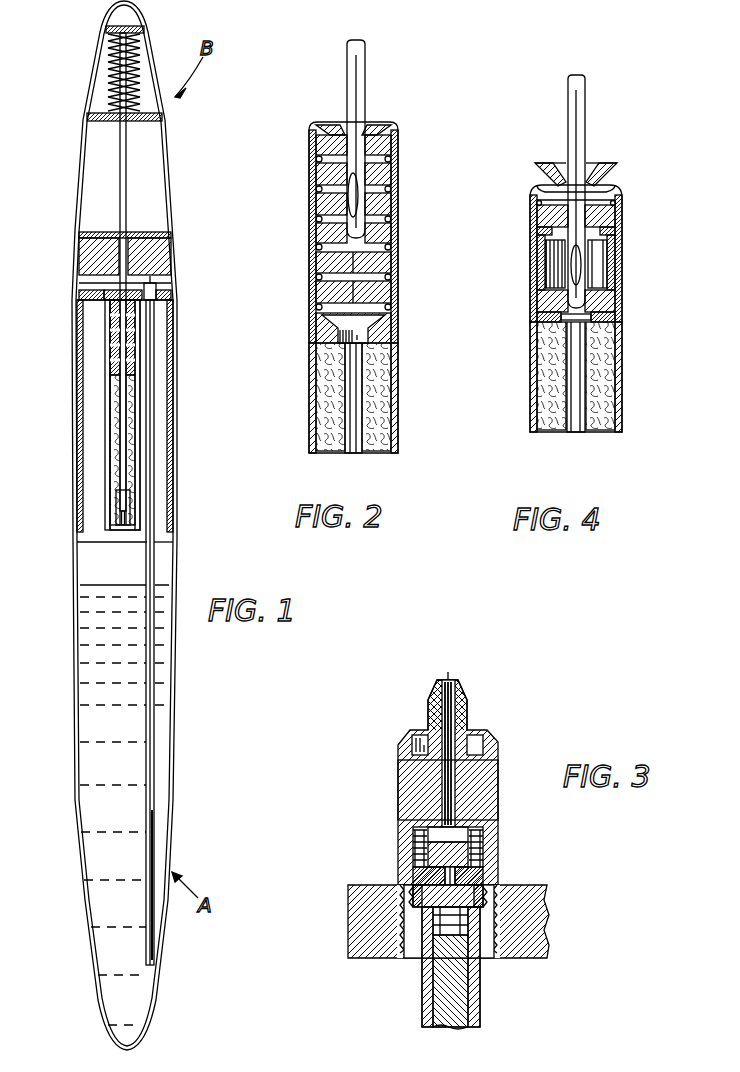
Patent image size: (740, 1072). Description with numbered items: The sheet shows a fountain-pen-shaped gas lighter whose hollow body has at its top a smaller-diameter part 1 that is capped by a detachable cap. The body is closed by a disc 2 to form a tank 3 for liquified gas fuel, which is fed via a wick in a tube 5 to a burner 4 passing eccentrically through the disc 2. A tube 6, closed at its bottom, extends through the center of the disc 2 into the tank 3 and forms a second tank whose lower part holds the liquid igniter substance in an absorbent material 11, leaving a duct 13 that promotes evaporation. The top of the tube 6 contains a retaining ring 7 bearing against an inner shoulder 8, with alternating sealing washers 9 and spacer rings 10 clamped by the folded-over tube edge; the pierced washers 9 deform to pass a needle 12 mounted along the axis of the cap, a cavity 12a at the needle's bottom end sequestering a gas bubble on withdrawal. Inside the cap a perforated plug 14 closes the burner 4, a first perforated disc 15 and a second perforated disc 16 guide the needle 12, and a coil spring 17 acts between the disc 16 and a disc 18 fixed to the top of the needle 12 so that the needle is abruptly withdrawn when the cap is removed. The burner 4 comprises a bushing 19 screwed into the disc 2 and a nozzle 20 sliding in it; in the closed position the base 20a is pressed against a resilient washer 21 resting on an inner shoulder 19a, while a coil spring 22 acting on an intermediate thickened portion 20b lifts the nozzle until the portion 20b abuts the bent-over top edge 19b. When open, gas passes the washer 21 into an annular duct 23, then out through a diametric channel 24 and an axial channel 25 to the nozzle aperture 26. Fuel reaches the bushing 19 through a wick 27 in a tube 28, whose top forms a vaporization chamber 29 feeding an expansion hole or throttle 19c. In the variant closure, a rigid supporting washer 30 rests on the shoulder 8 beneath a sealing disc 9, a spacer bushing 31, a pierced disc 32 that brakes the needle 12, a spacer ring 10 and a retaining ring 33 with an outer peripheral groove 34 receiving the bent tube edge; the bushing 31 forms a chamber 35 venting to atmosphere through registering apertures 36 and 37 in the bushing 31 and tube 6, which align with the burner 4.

In FIG. 1, the smaller-diameter part 1 is at (77, 400).
In FIG. 1, the disc 2 is at (92, 310).
In FIG. 3, the disc 2 is at (548, 924).
In FIG. 1, the tank 3 is at (165, 696).
In FIG. 1, the burner 4 is at (158, 284).
In FIG. 1, the tube 5 is at (150, 762).
In FIG. 1, the tube 6 is at (110, 442).
In FIG. 2, the tube 6 is at (318, 398).
In FIG. 4, the tube 6 is at (537, 384).
In FIG. 2, the retaining ring 7 is at (320, 330).
In FIG. 2, the inner shoulder 8 is at (393, 342).
In FIG. 4, the inner shoulder 8 is at (620, 322).
In FIG. 2, the sealing washers 9 is at (316, 262).
In FIG. 4, the sealing washers 9 is at (615, 292).
In FIG. 2, the spacer rings 10 is at (316, 183).
In FIG. 4, the spacer rings 10 is at (618, 200).
In FIG. 1, the absorbent material 11 is at (140, 470).
In FIG. 2, the absorbent material 11 is at (362, 405).
In FIG. 1, the needle 12 is at (120, 176).
In FIG. 2, the needle 12 is at (347, 72).
In FIG. 4, the needle 12 is at (568, 104).
In FIG. 2, the cavity 12a is at (357, 204).
In FIG. 1, the duct 13 is at (123, 508).
In FIG. 2, the duct 13 is at (356, 434).
In FIG. 1, the perforated plug 14 is at (90, 258).
In FIG. 1, the first perforated disc 15 is at (90, 236).
In FIG. 1, the second perforated disc 16 is at (88, 117).
In FIG. 1, the coil spring 17 is at (110, 58).
In FIG. 1, the disc 18 is at (108, 30).
In FIG. 3, the bushing 19 is at (396, 757).
In FIG. 3, the inner shoulder 19a is at (420, 888).
In FIG. 3, the top edge 19b is at (482, 732).
In FIG. 3, the expansion hole or throttle 19c is at (440, 928).
In FIG. 3, the nozzle 20 is at (468, 688).
In FIG. 3, the base 20a is at (456, 872).
In FIG. 3, the intermediate thickened portion 20b is at (416, 800).
In FIG. 3, the washer 21 is at (422, 882).
In FIG. 3, the coil spring 22 is at (483, 836).
In FIG. 3, the annular duct 23 is at (420, 860).
In FIG. 3, the diametric channel 24 is at (432, 832).
In FIG. 3, the axial channel 25 is at (440, 700).
In FIG. 3, the nozzle aperture 26 is at (449, 678).
In FIG. 3, the wick 27 is at (450, 1030).
In FIG. 3, the tube 28 is at (480, 1005).
In FIG. 3, the vaporization chamber 29 is at (483, 960).
In FIG. 4, the rigid supporting washer 30 is at (540, 316).
In FIG. 4, the spacer bushing 31 is at (615, 265).
In FIG. 4, the pierced disc 32 is at (537, 214).
In FIG. 4, the retaining ring 33 is at (618, 168).
In FIG. 4, the outer peripheral groove 34 is at (530, 172).
In FIG. 4, the chamber 35 is at (598, 250).
In FIG. 4, the aperture 36 is at (540, 270).
In FIG. 4, the aperture 37 is at (548, 250).